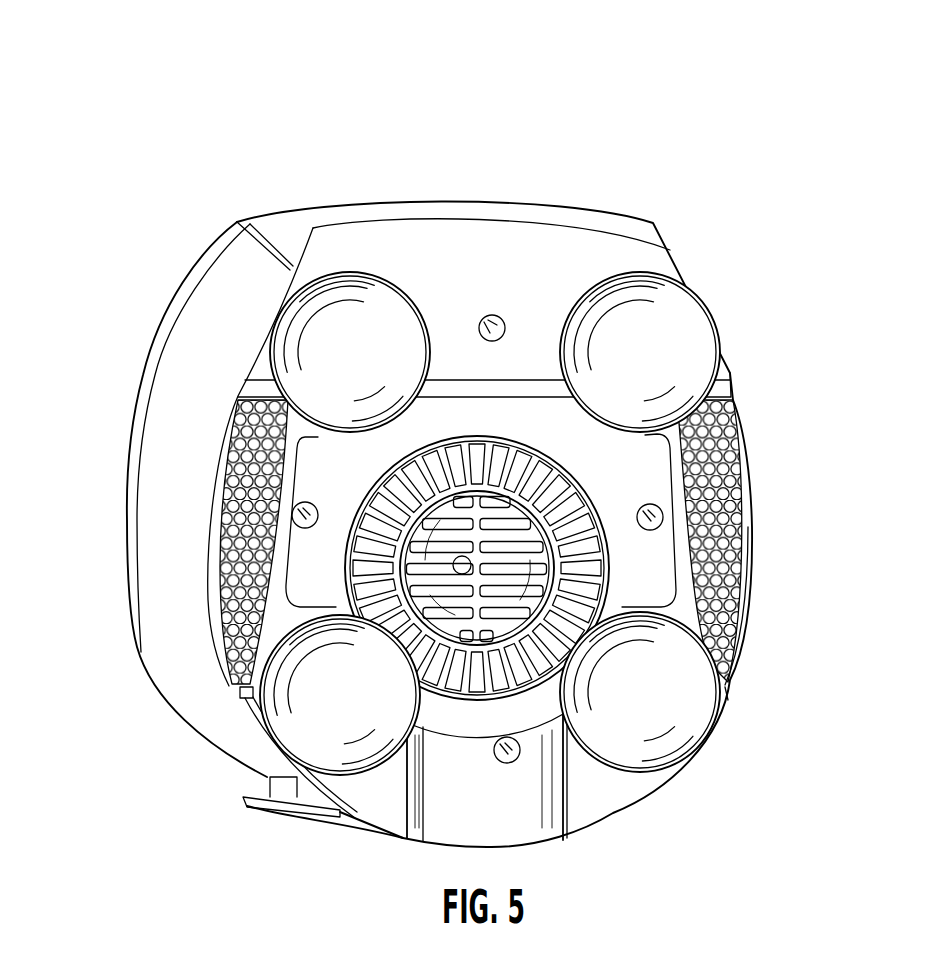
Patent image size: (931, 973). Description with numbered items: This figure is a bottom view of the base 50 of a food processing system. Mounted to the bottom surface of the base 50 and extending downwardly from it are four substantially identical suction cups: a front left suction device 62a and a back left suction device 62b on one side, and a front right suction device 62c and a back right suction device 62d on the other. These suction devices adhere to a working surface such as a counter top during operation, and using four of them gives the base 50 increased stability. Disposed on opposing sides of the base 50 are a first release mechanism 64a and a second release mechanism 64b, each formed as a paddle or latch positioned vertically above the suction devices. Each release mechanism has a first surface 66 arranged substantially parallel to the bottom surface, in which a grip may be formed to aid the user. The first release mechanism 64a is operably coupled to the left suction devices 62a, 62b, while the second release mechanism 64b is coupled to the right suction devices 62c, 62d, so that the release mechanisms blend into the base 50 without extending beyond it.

The base 50 is at (758, 132).
The front left suction device 62a is at (327, 340).
The back left suction device 62b is at (342, 710).
The front right suction device 62c is at (672, 348).
The back right suction device 62d is at (648, 702).
The first release mechanism 64a is at (197, 460).
The second release mechanism 64b is at (765, 440).
The first surface 66 is at (748, 512).